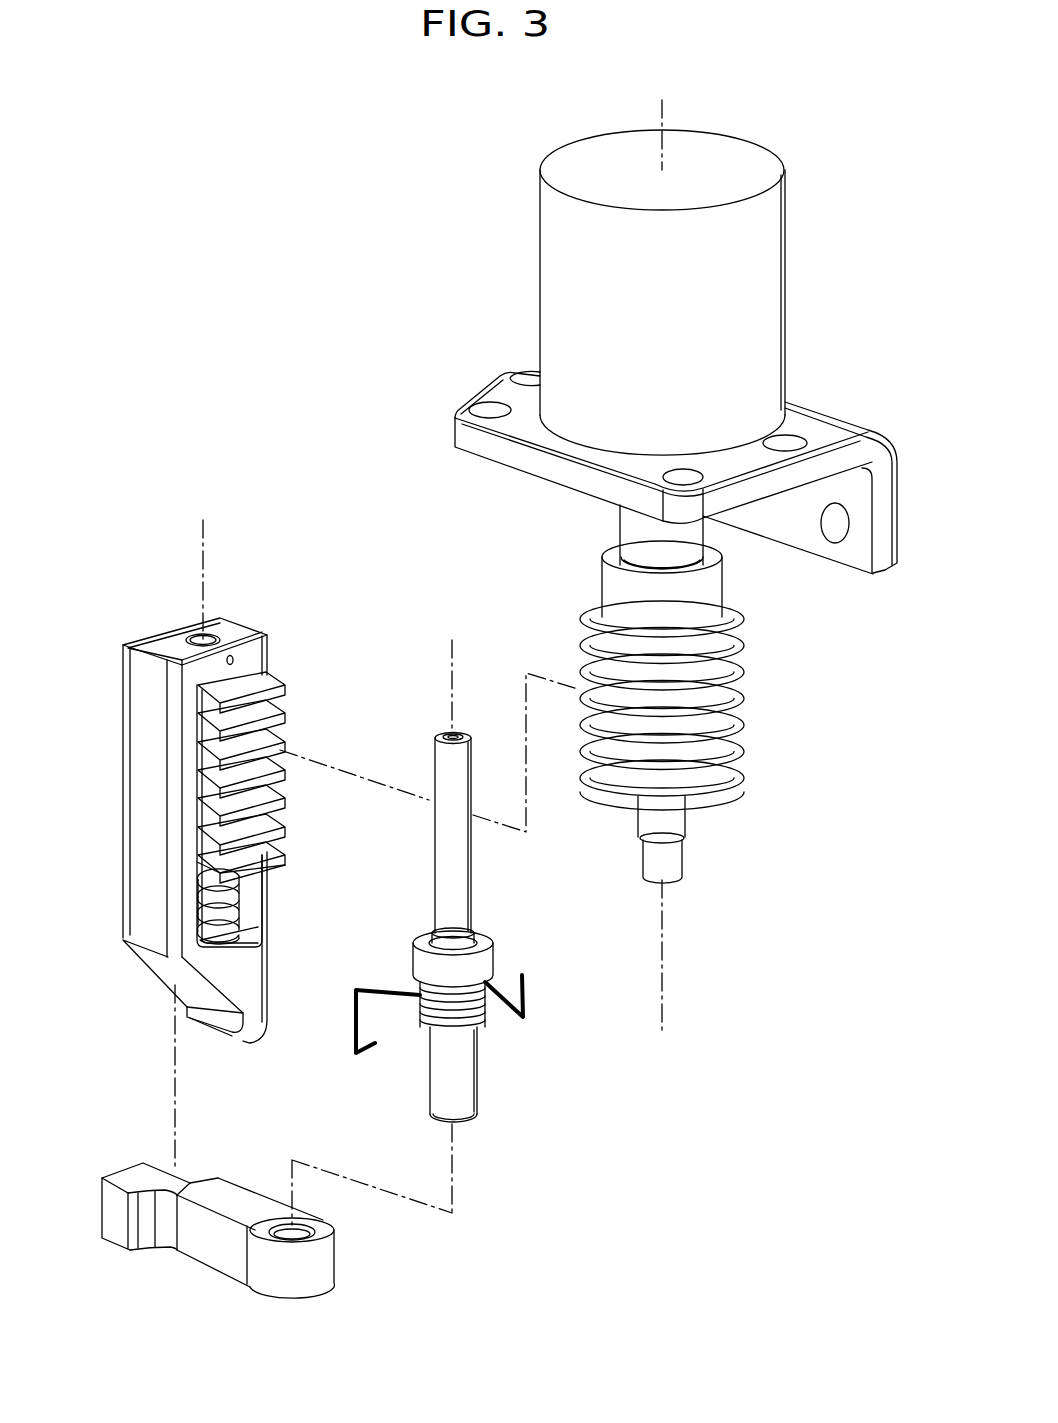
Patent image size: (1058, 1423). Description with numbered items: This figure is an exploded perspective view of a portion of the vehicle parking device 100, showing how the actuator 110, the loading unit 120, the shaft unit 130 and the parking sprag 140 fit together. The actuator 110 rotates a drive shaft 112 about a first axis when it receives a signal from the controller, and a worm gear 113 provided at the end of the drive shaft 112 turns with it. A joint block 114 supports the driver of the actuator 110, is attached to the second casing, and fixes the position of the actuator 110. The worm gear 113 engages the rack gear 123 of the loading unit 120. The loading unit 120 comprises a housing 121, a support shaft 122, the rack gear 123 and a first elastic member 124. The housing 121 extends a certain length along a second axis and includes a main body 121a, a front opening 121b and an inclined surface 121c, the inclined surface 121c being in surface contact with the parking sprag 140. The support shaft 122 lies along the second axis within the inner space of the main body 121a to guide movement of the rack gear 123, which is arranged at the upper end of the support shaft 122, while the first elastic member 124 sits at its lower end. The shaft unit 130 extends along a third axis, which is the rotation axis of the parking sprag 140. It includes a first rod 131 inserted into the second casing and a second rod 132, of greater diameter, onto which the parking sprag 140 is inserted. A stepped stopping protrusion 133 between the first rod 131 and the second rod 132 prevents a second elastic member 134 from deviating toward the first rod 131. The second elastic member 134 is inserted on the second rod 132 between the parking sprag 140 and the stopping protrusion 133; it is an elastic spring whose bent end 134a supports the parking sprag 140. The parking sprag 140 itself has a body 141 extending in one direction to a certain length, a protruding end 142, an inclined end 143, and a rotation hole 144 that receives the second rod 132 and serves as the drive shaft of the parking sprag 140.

The vehicle parking device 100 is at (868, 88).
The actuator 110 is at (846, 405).
The drive shaft 112 is at (672, 822).
The worm gear 113 is at (768, 243).
The joint block 114 is at (890, 527).
The loading unit 120 is at (118, 612).
The housing 121 is at (66, 737).
The main body 121a is at (147, 743).
The front opening 121b is at (197, 823).
The inclined surface 121c is at (167, 974).
The support shaft 122 is at (228, 887).
The rack gear 123 is at (270, 806).
The first elastic member 124 is at (234, 921).
The shaft unit 130 is at (590, 875).
The first rod 131 is at (465, 887).
The second rod 132 is at (462, 1082).
The stopping protrusion 133 is at (480, 962).
The second elastic member 134 is at (460, 1018).
The end of second elastic member 134a is at (353, 1036).
The parking sprag 140 is at (352, 1269).
The body 141 is at (222, 1203).
The protruding end 142 is at (113, 1232).
The inclined end 143 is at (162, 1170).
The rotation hole 144 is at (299, 1229).